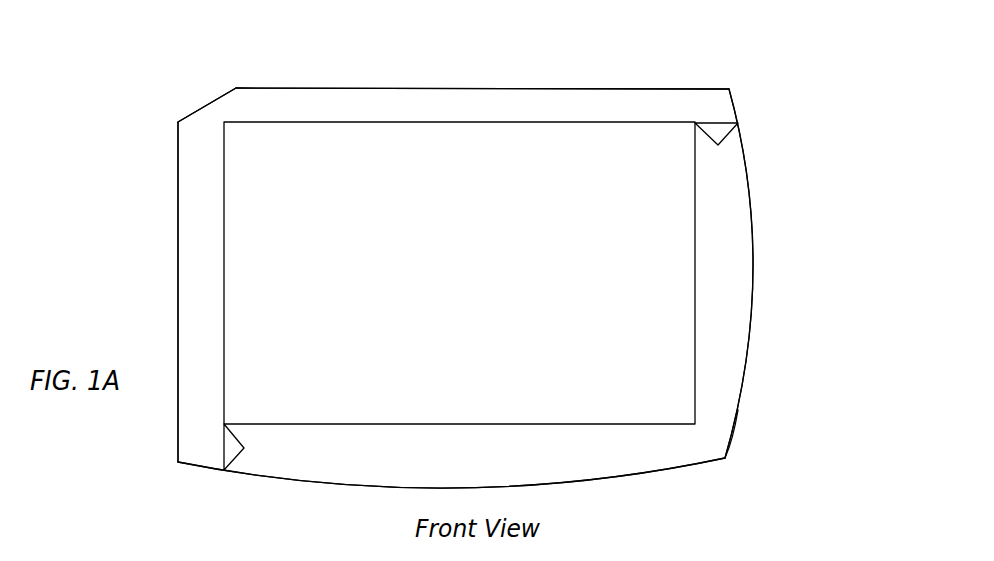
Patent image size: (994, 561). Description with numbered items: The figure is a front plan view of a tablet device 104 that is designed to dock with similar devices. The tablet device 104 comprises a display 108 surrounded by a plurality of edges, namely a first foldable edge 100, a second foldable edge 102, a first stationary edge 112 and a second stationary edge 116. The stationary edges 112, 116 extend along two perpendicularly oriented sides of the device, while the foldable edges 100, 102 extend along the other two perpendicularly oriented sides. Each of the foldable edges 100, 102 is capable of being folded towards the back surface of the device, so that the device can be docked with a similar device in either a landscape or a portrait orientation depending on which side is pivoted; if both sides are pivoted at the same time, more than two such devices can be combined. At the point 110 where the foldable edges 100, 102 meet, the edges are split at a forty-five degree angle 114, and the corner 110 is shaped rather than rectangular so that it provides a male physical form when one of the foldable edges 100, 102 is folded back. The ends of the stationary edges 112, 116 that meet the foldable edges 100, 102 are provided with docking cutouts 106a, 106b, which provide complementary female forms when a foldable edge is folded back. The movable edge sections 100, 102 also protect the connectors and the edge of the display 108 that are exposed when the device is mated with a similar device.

The foldable edge 100 is at (188, 305).
The foldable edge 102 is at (357, 100).
The tablet device 104 is at (748, 130).
The docking cutout 106a is at (222, 455).
The docking cutout 106b is at (725, 120).
The display 108 is at (655, 322).
The meeting point of foldable edges 110 is at (198, 98).
The stationary edge 112 is at (597, 467).
The 45 degree angle split 114 is at (212, 142).
The stationary edge 116 is at (720, 412).